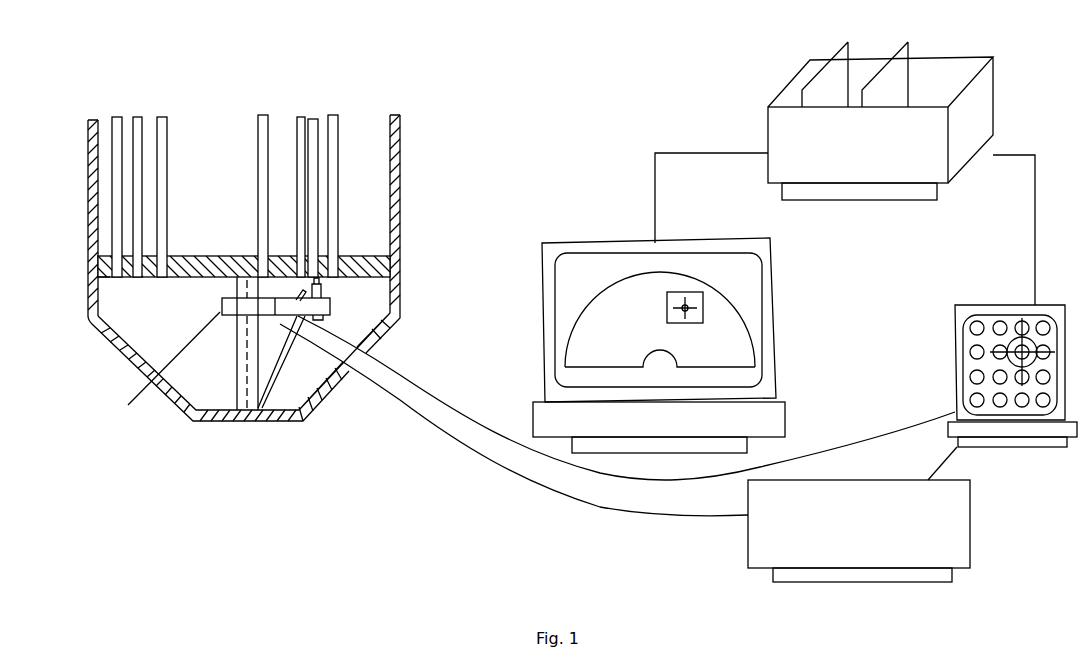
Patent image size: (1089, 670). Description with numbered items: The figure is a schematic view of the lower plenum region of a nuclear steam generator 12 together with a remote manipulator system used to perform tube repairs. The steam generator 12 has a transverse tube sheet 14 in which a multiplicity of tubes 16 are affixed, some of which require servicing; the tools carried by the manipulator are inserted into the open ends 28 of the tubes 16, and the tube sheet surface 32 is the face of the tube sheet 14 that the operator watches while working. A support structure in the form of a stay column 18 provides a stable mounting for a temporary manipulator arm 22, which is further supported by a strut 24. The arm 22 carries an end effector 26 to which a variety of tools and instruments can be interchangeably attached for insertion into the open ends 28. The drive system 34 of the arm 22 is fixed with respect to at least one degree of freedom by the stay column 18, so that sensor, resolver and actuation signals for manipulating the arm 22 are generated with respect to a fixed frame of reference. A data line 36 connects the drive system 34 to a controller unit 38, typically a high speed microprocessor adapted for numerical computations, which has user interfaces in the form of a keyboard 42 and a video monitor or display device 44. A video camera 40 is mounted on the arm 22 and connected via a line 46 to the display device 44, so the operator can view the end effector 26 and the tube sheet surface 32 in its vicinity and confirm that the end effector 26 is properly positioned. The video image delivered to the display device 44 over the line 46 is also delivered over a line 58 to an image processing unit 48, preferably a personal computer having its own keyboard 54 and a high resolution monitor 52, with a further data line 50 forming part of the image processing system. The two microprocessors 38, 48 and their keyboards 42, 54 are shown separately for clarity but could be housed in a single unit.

The nuclear steam generator 12 is at (397, 143).
The tube sheet 14 is at (368, 252).
The tubes 16 is at (340, 228).
The stay column 18 is at (237, 383).
The manipulator arm 22 is at (330, 305).
The strut 24 is at (277, 368).
The end effector 26 is at (321, 282).
The open ends 28 is at (90, 305).
The tube sheet surface 32 is at (120, 280).
The drive system 34 is at (161, 365).
The data line 36 is at (410, 407).
The controller unit 38 is at (970, 530).
The video camera 40 is at (302, 292).
The keyboard 42 is at (935, 582).
The display device 44 is at (955, 330).
The line 46 is at (425, 392).
The image processing unit 48 is at (960, 55).
The data line 50 is at (693, 150).
The high resolution monitor 52 is at (776, 277).
The keyboard 54 is at (937, 188).
The line 58 is at (1037, 217).